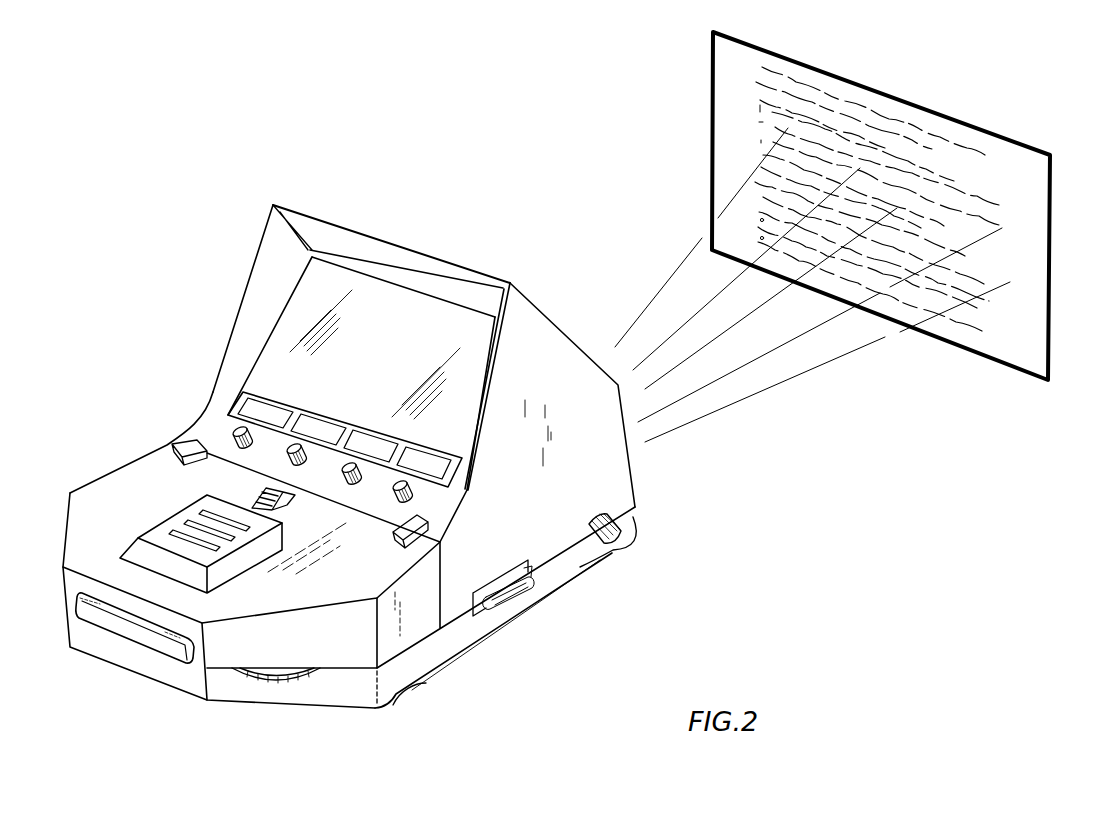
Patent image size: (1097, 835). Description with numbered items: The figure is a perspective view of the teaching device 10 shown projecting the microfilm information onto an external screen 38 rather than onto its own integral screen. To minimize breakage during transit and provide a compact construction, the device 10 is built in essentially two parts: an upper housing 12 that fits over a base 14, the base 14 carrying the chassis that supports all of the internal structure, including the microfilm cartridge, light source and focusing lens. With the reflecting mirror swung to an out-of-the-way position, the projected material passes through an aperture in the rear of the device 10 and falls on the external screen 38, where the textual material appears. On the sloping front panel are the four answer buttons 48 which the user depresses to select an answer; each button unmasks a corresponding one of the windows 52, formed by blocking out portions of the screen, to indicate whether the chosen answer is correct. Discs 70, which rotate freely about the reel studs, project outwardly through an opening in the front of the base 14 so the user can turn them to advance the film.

The teaching device 10 is at (538, 275).
The upper housing 12 is at (627, 466).
The base 14 is at (552, 577).
The external screen 38 is at (1007, 141).
The answer buttons 48 is at (292, 461).
The windows 52 is at (213, 391).
The discs 70 is at (268, 679).